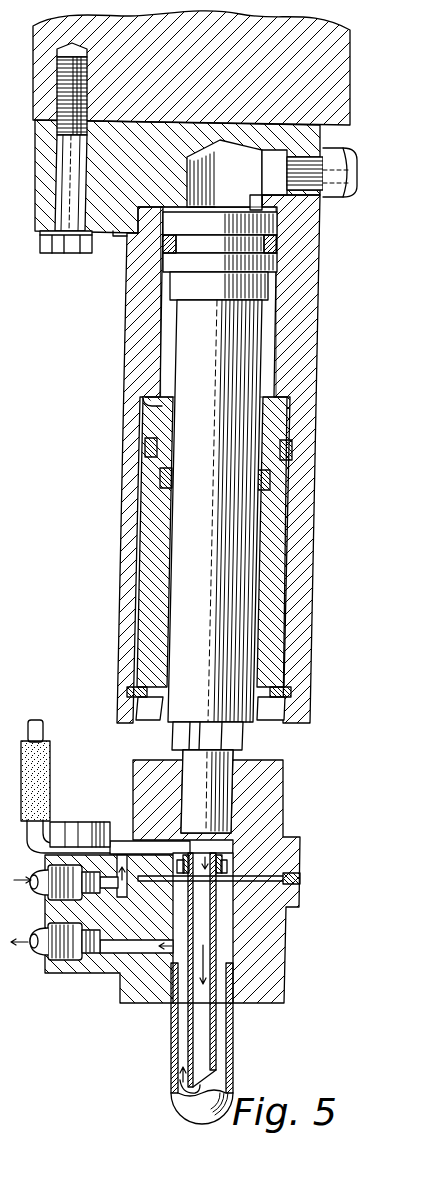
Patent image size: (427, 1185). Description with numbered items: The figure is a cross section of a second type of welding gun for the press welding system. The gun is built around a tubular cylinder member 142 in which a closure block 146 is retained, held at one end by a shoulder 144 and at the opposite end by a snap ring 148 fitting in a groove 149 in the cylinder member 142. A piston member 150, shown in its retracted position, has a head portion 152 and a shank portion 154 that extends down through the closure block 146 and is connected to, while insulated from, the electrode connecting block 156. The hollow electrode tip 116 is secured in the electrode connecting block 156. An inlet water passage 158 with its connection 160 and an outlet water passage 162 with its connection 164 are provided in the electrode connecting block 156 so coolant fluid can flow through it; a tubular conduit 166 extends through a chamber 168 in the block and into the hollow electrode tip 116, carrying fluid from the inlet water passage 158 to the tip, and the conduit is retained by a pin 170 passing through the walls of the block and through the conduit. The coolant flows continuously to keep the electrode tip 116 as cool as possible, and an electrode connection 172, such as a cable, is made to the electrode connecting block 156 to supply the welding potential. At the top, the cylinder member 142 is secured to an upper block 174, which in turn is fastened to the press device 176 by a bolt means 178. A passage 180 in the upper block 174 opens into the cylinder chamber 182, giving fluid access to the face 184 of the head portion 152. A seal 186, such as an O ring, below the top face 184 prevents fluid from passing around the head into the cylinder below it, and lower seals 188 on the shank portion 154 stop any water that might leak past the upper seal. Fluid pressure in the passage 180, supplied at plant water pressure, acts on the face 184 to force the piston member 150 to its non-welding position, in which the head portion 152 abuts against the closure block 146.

The electrode tip 116 is at (230, 1050).
The tubular cylinder member 142 is at (300, 400).
The shoulder 144 is at (160, 401).
The closure block 146 is at (157, 507).
The snap ring 148 is at (302, 693).
The groove 149 is at (122, 703).
The piston member 150 is at (182, 368).
The head portion 152 is at (278, 268).
The shank portion 154 is at (247, 555).
The electrode connecting block 156 is at (270, 805).
The inlet water passage 158 is at (147, 837).
The inlet connection 160 is at (63, 910).
The outlet water passage 162 is at (120, 952).
The outlet connection 164 is at (40, 963).
The tubular conduit 166 is at (193, 1022).
The chamber 168 is at (232, 949).
The pin 170 is at (270, 880).
The electrode connection 172 is at (48, 724).
The upper block 174 is at (113, 238).
The press device 176 is at (335, 52).
The bolt means 178 is at (65, 254).
The passage 180 is at (276, 155).
The cylinder chamber 182 is at (200, 213).
The face 184 is at (253, 217).
The seal 186 is at (278, 246).
The lower seals 188 is at (268, 481).